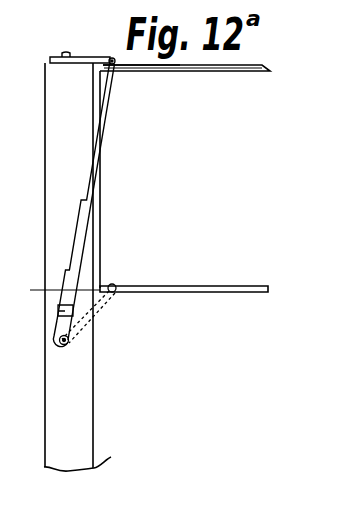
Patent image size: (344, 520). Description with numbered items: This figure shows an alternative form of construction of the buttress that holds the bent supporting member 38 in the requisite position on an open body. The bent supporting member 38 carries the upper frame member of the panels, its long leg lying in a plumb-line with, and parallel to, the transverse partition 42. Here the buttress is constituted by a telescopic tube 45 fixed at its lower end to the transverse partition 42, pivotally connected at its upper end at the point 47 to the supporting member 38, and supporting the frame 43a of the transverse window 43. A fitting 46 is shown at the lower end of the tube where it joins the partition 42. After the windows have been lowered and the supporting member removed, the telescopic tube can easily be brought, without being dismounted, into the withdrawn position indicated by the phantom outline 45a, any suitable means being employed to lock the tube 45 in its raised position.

The bent supporting member 38 is at (80, 61).
The pivot pin 47 is at (116, 61).
The transverse window 43 is at (206, 121).
The frame 43a is at (185, 65).
The transverse partition 42 is at (179, 305).
The telescoping link 45 is at (96, 164).
The link in alternate position 45a is at (97, 308).
The bracket 46 is at (60, 310).